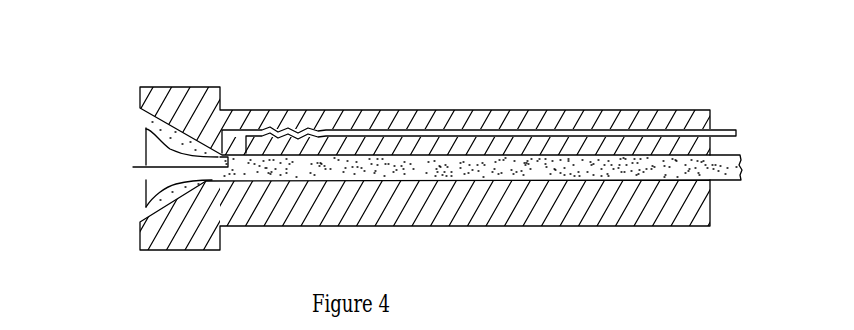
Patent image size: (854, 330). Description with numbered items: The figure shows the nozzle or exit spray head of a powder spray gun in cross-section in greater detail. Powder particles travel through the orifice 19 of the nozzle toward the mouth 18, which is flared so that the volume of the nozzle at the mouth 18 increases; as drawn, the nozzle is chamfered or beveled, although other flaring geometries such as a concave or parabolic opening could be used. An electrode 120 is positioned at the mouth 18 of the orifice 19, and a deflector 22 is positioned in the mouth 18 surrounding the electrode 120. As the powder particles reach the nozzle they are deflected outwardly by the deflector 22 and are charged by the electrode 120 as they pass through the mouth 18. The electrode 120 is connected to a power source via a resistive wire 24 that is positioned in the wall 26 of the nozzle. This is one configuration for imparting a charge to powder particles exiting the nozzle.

The mouth 18 is at (179, 137).
The orifice 19 is at (352, 163).
The deflector 22 is at (146, 144).
The resistive wire 24 is at (220, 167).
The wall 26 is at (292, 184).
The electrode 120 is at (133, 167).